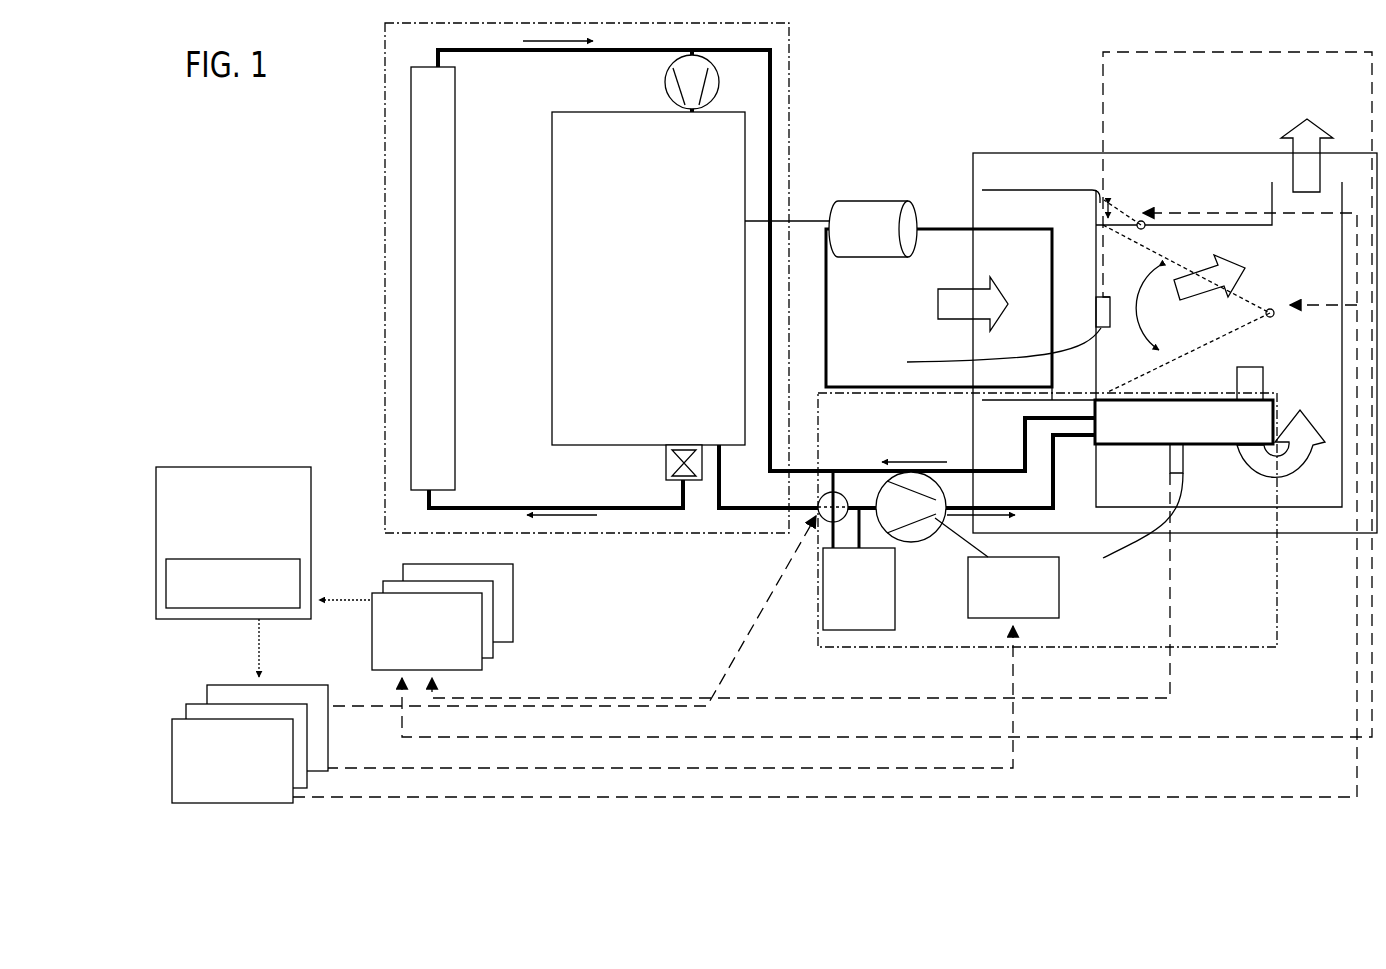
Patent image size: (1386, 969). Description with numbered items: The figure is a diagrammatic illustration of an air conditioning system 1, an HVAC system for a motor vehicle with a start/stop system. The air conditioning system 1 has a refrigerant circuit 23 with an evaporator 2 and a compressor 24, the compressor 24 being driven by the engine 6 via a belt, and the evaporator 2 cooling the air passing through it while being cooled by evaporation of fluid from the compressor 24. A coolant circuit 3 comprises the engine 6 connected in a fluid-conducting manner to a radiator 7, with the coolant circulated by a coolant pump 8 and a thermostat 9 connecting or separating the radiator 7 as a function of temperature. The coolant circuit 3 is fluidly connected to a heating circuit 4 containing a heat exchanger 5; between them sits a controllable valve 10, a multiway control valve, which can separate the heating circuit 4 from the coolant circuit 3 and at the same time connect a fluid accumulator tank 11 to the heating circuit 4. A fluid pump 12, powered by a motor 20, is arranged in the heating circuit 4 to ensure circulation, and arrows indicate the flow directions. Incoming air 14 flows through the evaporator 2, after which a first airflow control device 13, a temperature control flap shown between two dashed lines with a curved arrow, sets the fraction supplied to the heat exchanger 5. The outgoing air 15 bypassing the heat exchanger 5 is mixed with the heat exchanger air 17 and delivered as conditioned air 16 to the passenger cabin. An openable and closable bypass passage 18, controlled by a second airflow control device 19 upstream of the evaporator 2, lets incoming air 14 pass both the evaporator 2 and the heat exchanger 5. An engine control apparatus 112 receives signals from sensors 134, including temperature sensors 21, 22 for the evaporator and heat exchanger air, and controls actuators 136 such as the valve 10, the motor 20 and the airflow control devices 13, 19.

The air conditioning system 1 is at (1097, 157).
The evaporator 2 is at (1197, 344).
The coolant circuit 3 is at (790, 107).
The heating circuit 4 is at (1113, 648).
The heat exchanger 5 is at (1184, 405).
The engine 6 is at (648, 278).
The radiator 7 is at (433, 278).
The coolant pump 8 is at (664, 82).
The thermostat 9 is at (664, 462).
The controllable valve 10 is at (821, 529).
The fluid accumulator tank 11 is at (859, 569).
The fluid pump 12 is at (920, 523).
The first airflow control device 13 is at (1274, 305).
The incoming air 14 is at (950, 298).
The outgoing air 15 is at (1237, 270).
The conditioned air 16 is at (1312, 132).
The heat exchanger air 17 is at (1243, 462).
The bypass passage 18 is at (1053, 200).
The second airflow control device 19 is at (1122, 213).
The motor 20 is at (683, 662).
The temperature sensor 21 is at (994, 337).
The temperature sensor 22 is at (807, 571).
The refrigerant circuit 23 is at (948, 227).
The compressor 24 is at (873, 229).
The engine control apparatus 112 is at (312, 493).
The sensors 134 is at (515, 592).
The actuators 136 is at (328, 725).